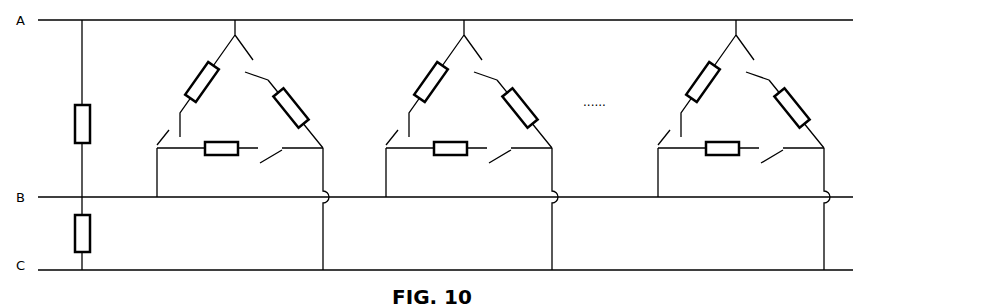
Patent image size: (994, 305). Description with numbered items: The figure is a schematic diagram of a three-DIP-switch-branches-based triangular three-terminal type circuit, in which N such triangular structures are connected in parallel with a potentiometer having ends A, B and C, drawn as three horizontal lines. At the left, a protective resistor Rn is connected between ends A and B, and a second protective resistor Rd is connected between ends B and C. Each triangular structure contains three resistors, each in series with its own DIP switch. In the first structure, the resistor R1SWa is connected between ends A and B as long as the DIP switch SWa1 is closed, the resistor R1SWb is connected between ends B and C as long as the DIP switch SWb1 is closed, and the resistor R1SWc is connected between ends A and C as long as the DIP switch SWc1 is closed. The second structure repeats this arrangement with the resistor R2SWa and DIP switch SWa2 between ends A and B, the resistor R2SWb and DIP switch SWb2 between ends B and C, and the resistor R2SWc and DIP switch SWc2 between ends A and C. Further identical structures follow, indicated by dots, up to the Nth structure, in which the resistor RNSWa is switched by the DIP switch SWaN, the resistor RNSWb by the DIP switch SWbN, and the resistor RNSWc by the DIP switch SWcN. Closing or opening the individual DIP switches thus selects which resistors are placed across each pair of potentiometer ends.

The protective resistor Rn is at (68, 124).
The protective resistor Rd is at (68, 233).
The resistor R1SWa is at (185, 78).
The DIP switch SWa1 is at (145, 119).
The resistor R1SWb is at (207, 136).
The DIP switch SWb1 is at (286, 148).
The DIP switch SWc1 is at (275, 60).
The resistor R1SWc is at (303, 100).
The resistor R2SWa is at (414, 78).
The DIP switch SWa2 is at (374, 119).
The resistor R2SWb is at (436, 136).
The DIP switch SWb2 is at (515, 148).
The DIP switch SWc2 is at (504, 60).
The resistor R2SWc is at (532, 100).
The resistor RNSWa is at (686, 78).
The DIP switch SWaN is at (646, 119).
The resistor RNSWb is at (708, 136).
The DIP switch SWbN is at (787, 148).
The DIP switch SWcN is at (777, 60).
The resistor RNSWc is at (804, 100).